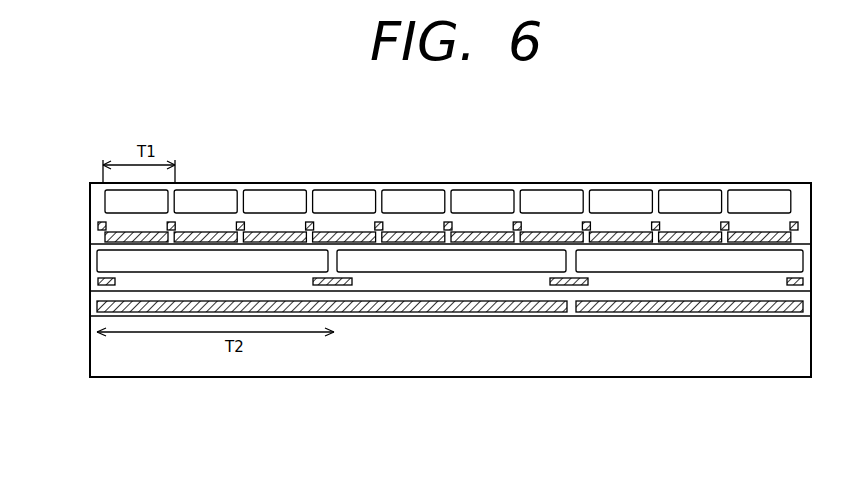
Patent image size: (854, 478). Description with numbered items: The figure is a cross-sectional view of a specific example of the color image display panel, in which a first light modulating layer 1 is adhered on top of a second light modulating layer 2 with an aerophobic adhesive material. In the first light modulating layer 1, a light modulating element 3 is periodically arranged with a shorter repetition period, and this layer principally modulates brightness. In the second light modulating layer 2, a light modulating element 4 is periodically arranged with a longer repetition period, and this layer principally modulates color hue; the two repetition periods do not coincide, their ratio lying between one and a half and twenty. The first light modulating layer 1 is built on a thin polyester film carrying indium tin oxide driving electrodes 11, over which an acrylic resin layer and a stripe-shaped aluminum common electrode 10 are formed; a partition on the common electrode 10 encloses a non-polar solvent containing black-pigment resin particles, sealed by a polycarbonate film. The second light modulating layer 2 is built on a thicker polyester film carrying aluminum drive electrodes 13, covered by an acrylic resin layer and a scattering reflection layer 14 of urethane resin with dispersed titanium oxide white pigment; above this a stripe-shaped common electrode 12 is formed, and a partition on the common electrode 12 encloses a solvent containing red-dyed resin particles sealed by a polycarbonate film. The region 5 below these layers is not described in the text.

The first light modulating layer 1 is at (97, 194).
The second light modulating layer 2 is at (88, 268).
The light modulating element 3 is at (276, 200).
The light modulating element 4 is at (213, 258).
The substrate region 5 is at (267, 343).
The common electrode 10 is at (385, 224).
The driving electrodes 11 is at (350, 232).
The common electrode 12 is at (334, 288).
The drive electrodes 13 is at (443, 311).
The scattering reflection layer 14 is at (528, 293).